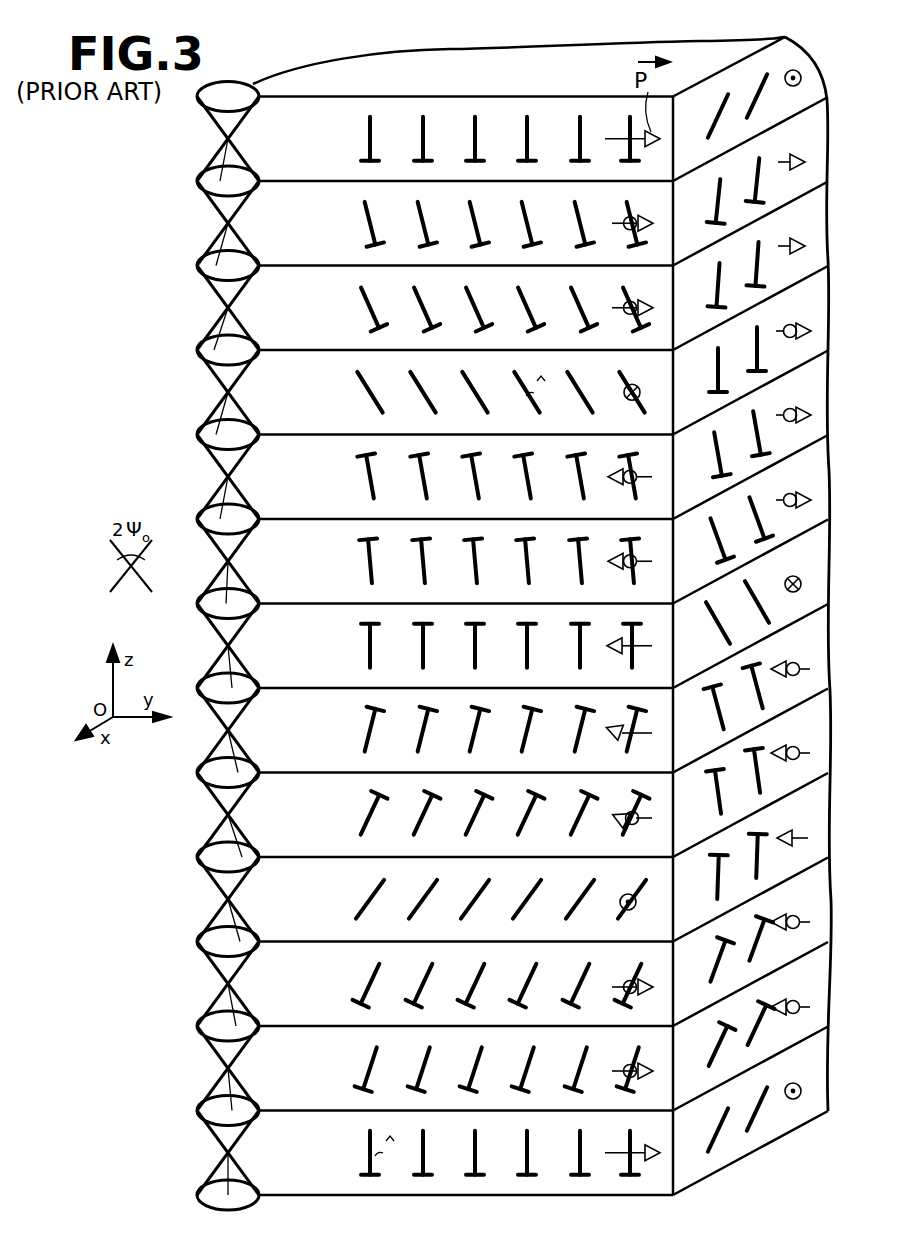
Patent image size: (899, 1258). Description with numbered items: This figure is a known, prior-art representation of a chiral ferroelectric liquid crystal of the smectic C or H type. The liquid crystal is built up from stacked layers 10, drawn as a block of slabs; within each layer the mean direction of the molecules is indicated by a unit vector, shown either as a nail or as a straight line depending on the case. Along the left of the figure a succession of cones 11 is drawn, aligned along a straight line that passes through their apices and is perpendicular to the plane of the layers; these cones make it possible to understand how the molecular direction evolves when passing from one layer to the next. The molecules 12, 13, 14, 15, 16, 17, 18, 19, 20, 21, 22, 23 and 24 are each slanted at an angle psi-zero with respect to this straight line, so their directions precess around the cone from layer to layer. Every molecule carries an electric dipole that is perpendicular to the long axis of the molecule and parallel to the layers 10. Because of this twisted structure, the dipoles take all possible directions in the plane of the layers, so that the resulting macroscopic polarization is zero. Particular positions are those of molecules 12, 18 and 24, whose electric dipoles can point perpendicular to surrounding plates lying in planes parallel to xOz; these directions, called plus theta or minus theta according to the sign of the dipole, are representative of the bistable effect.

The layers 10 is at (305, 120).
The cones 11 is at (218, 116).
The molecule 12 is at (241, 149).
The molecule 13 is at (241, 253).
The molecule 14 is at (241, 328).
The molecule 15 is at (241, 418).
The molecule 16 is at (241, 505).
The molecule 17 is at (240, 589).
The molecule 18 is at (240, 674).
The molecule 19 is at (240, 758).
The molecule 20 is at (242, 831).
The molecule 21 is at (242, 916).
The molecule 22 is at (241, 1006).
The molecule 23 is at (241, 1089).
The molecule 24 is at (241, 1169).